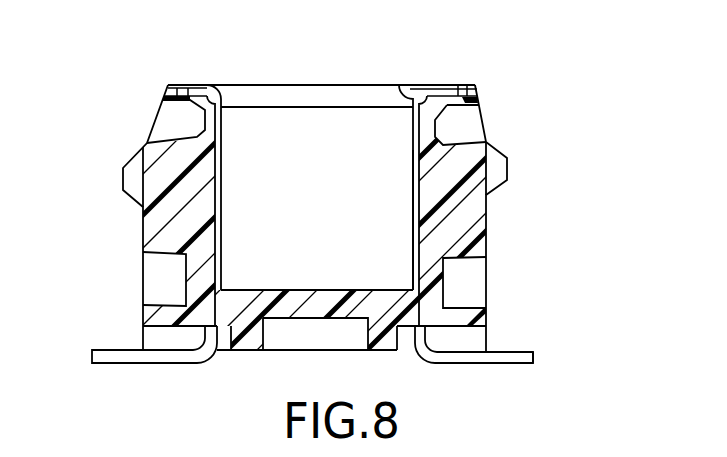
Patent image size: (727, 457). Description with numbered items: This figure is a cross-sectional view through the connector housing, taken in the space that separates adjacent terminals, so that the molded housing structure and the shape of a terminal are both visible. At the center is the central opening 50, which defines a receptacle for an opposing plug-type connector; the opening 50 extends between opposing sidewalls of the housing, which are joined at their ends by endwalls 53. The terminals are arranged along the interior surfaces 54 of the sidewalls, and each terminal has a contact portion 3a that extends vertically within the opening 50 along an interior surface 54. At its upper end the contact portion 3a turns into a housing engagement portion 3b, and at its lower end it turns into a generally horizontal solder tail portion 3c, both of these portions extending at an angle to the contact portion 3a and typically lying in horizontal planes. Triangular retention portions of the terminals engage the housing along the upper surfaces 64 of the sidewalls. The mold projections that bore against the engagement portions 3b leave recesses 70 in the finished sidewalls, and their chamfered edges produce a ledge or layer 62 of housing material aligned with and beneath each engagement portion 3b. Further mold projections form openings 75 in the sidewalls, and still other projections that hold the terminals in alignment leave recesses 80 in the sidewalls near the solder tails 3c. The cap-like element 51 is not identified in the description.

The central opening 50 is at (303, 120).
The cap 51 is at (397, 113).
The endwall 53 is at (325, 219).
The interior surface 54 is at (458, 84).
The ledge 62 is at (188, 99).
The upper surface 64 is at (208, 89).
The recess 70 is at (172, 117).
The opening 75 is at (475, 287).
The recess 80 is at (150, 337).
The contact portion 3a is at (413, 153).
The housing engagement portion 3b is at (452, 84).
The solder tail portion 3c is at (508, 366).